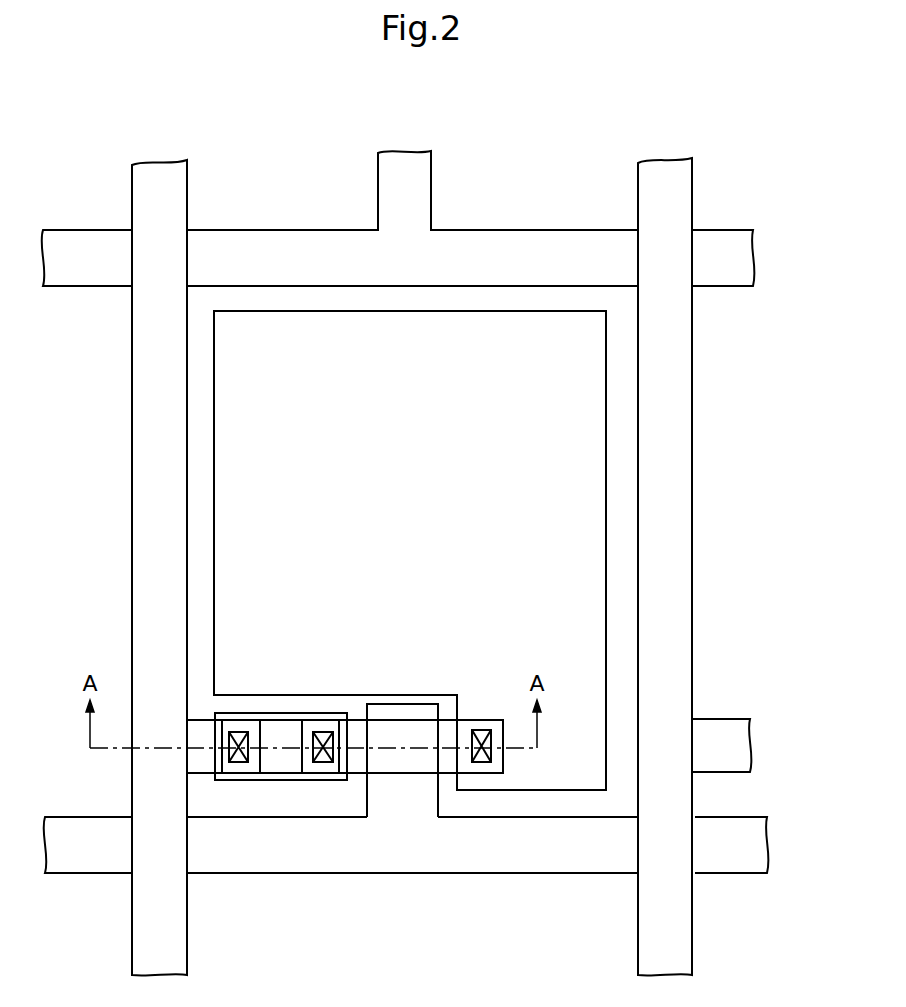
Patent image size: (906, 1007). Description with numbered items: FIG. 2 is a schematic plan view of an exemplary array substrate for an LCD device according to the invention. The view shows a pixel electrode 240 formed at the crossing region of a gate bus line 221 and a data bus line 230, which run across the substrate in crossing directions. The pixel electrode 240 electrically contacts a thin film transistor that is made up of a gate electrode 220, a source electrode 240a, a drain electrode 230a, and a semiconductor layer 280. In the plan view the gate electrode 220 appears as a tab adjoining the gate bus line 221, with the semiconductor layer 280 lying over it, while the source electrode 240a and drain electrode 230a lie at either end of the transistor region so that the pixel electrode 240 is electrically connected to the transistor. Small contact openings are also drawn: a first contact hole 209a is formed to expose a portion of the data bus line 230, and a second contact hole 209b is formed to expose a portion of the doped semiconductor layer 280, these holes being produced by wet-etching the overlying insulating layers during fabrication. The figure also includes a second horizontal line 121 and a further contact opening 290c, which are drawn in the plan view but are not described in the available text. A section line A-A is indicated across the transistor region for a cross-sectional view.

The gate line 121 is at (467, 246).
The data bus line 230 is at (153, 461).
The gate bus line 221 is at (557, 855).
The pixel electrode 240 is at (575, 482).
The source electrode 240a is at (283, 714).
The semiconductor layer 280 is at (405, 757).
The gate electrode 220 is at (402, 712).
The first contact hole 209a is at (238, 758).
The second contact hole 209b is at (324, 758).
The drain electrode 230a is at (485, 715).
The contact hole 290c is at (480, 758).